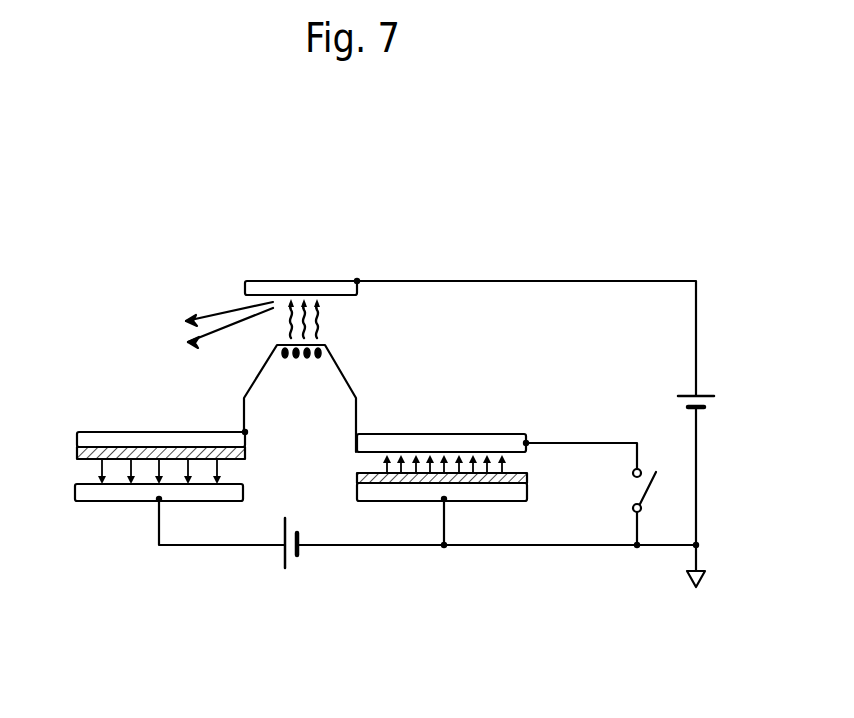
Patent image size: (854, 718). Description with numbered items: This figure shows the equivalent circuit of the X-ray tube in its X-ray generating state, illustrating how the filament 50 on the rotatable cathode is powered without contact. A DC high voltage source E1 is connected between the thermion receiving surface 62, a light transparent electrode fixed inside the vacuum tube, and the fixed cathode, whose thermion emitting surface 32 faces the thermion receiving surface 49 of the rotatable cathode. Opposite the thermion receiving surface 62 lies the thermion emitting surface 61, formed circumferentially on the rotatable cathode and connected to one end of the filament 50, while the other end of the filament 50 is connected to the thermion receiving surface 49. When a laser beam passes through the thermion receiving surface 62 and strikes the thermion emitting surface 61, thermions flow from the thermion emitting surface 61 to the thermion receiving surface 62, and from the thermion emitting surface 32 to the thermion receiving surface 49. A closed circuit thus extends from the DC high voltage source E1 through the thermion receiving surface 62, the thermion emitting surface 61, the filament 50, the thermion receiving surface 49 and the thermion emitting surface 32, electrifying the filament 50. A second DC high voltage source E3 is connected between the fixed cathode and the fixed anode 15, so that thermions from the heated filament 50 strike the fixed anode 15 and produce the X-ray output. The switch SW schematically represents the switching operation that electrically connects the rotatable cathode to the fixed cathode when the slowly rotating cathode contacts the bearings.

The fixed anode 15 is at (309, 281).
The filament 50 is at (306, 350).
The thermion receiving surface 49 is at (472, 433).
The thermion emitting surface 32 is at (528, 481).
The thermion emitting surface 61 is at (77, 452).
The thermion receiving surface 62 is at (97, 503).
The DC high voltage source E1 is at (289, 556).
The DC high voltage source E3 is at (722, 401).
The switching operation SW is at (628, 486).
The element X-ray is at (179, 331).